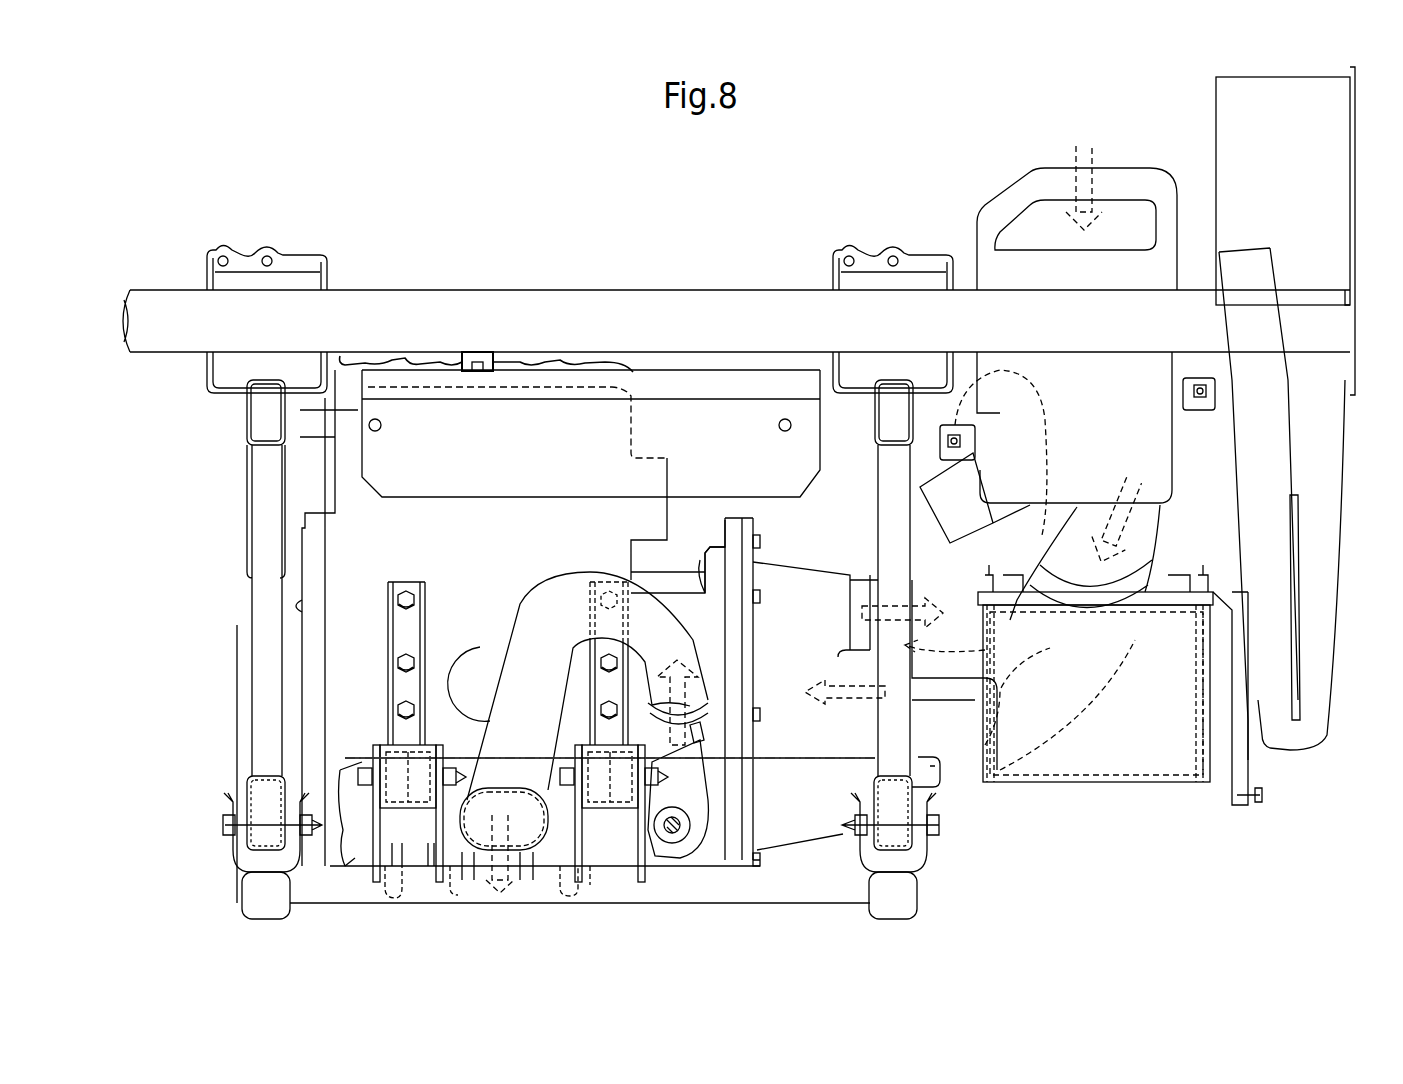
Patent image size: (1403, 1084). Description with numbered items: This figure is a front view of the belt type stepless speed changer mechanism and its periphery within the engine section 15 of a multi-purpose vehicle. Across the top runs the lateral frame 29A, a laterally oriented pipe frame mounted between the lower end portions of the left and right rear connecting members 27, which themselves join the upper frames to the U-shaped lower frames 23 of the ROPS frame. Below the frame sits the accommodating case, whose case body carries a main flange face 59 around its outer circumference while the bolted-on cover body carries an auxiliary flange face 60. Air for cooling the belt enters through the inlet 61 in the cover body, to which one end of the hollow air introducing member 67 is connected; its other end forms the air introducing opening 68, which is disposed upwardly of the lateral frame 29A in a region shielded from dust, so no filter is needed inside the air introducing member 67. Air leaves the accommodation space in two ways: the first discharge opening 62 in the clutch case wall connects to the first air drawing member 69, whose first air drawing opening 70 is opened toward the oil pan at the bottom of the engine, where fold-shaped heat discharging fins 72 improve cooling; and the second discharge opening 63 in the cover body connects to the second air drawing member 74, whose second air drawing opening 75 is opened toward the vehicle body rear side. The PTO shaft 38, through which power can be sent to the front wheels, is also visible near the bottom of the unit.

The engine section 15 is at (588, 334).
The lower frame 23 is at (1327, 637).
The rear connecting member 27 is at (1230, 118).
The lateral frame 29A is at (708, 298).
The PTO shaft 38 is at (682, 820).
The main flange face 59 is at (734, 520).
The auxiliary flange face 60 is at (753, 520).
The inlet 61 is at (985, 748).
The first discharge opening 62 is at (707, 682).
The second discharge opening 63 is at (955, 650).
The air introducing member 67 is at (1105, 722).
The air introducing opening 68 is at (1040, 210).
The first air drawing member 69 is at (525, 625).
The first air drawing opening 70 is at (533, 793).
The heat discharging fins 72 is at (455, 880).
The second air drawing member 74 is at (1030, 545).
The second air drawing opening 75 is at (1002, 396).